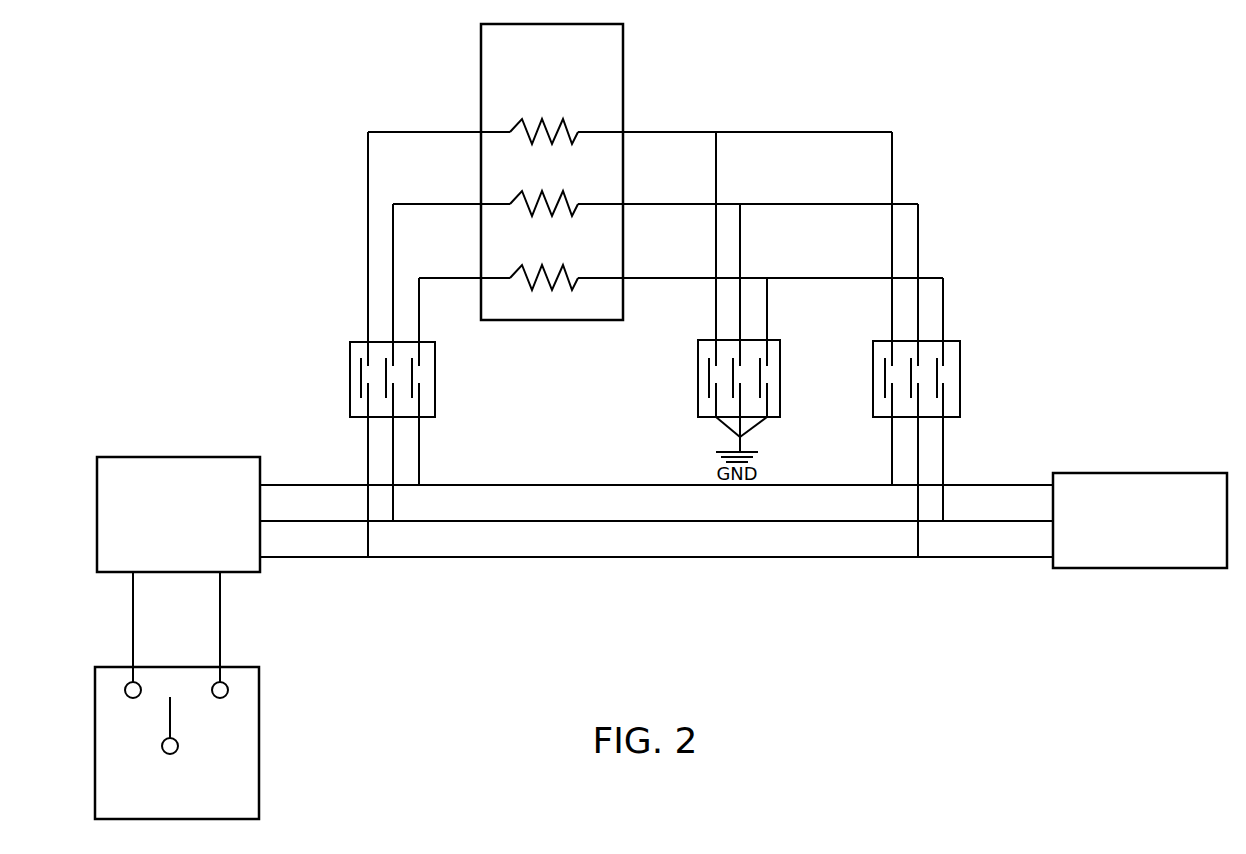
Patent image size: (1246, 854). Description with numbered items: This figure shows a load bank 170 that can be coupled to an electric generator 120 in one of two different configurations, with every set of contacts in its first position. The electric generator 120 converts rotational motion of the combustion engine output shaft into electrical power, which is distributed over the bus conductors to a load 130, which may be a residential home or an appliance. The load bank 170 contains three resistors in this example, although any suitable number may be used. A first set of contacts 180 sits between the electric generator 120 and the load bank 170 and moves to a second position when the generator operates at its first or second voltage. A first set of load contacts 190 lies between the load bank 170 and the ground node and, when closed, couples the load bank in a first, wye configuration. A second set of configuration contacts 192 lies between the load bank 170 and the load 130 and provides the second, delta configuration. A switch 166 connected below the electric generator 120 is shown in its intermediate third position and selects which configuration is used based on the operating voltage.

The electric generator 120 is at (160, 502).
The load 130 is at (1122, 519).
The switch 166 is at (160, 807).
The load bank 170 is at (533, 68).
The first set of contacts 180 is at (341, 366).
The first set of load contacts 190 is at (691, 367).
The second set of configuration contacts 192 is at (966, 372).